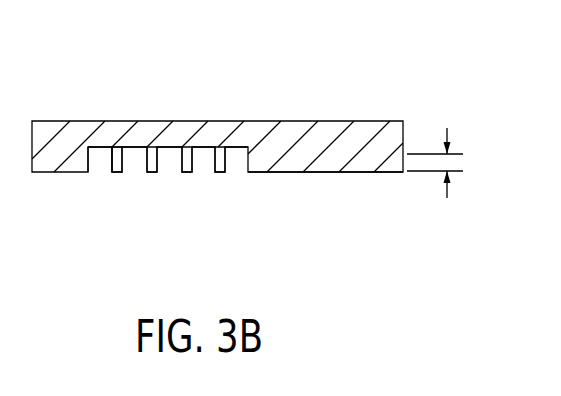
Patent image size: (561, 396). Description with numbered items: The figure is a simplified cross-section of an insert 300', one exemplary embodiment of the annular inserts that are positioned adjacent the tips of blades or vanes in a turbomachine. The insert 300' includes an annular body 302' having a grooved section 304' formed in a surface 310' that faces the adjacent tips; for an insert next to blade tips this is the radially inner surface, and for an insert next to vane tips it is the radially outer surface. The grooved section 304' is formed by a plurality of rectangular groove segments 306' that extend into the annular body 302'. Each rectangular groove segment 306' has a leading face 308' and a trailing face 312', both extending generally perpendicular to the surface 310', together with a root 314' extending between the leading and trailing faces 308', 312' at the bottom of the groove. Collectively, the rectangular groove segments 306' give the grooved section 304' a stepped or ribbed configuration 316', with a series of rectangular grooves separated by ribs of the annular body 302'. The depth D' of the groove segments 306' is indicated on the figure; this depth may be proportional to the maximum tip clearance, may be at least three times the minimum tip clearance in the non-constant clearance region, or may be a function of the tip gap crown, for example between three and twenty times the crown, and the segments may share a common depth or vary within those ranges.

The insert 300' is at (247, 152).
The annular body 302' is at (217, 118).
The grooved section 304' is at (168, 213).
The rectangular groove segments 306' is at (152, 190).
The leading face 308' is at (67, 192).
The surface 310' is at (325, 206).
The trailing face 312' is at (123, 116).
The root 314' is at (92, 202).
The stepped or ribbed configuration 316' is at (255, 182).
The depth D' is at (430, 177).